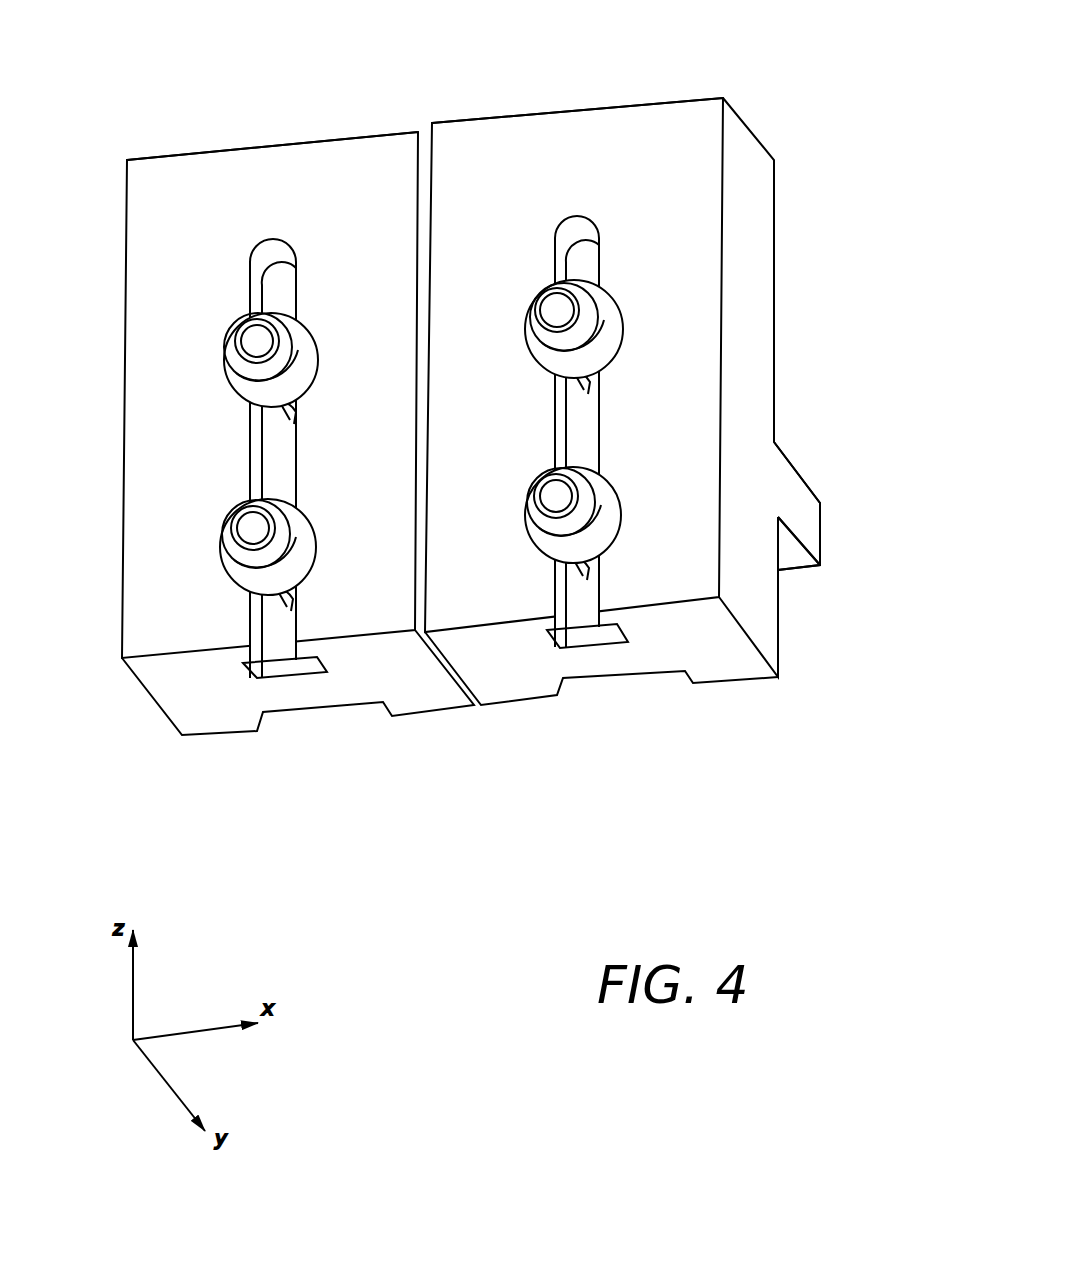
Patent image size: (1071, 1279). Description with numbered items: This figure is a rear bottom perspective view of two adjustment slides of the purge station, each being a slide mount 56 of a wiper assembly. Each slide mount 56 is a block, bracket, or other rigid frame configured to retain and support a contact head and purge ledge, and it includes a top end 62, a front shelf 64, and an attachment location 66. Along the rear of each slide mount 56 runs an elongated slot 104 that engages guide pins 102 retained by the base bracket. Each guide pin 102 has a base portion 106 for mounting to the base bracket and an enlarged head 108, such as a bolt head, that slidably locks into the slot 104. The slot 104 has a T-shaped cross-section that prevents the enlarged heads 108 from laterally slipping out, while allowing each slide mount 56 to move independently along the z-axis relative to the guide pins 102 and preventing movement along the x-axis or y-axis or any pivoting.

The slide mount 56 is at (177, 120).
The top end 62 is at (332, 132).
The front shelf 64 is at (806, 492).
The attachment location 66 is at (360, 722).
The guide pin 102 is at (207, 358).
The elongated slot 104 is at (253, 295).
The base portion 106 is at (283, 333).
The enlarged head 108 is at (287, 413).